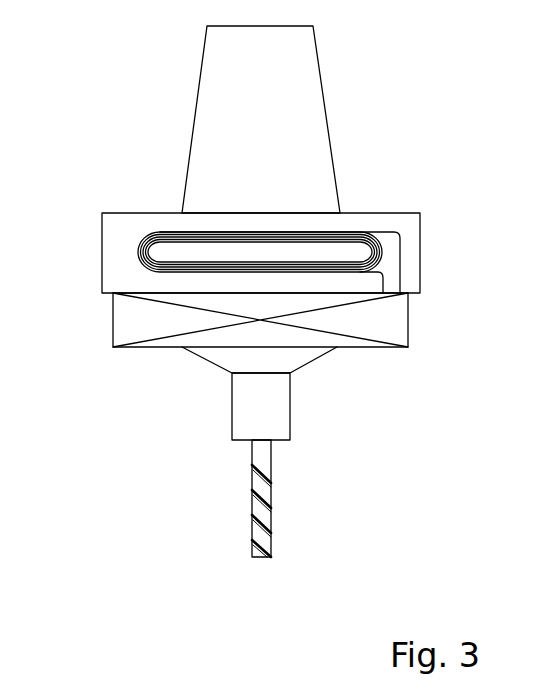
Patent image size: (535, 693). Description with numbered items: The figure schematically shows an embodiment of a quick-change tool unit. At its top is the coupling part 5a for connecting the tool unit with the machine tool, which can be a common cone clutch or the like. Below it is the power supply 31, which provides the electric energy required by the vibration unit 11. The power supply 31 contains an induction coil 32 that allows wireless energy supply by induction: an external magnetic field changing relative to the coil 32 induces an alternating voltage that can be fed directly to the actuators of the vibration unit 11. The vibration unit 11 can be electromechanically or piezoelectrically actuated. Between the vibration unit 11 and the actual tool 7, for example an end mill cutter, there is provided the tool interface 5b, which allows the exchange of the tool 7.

The coupling part 5a is at (317, 92).
The power supply 31 is at (413, 232).
The induction coil 32 is at (140, 254).
The vibration unit 11 is at (400, 313).
The tool interface 5b is at (285, 407).
The tool 7 is at (271, 495).